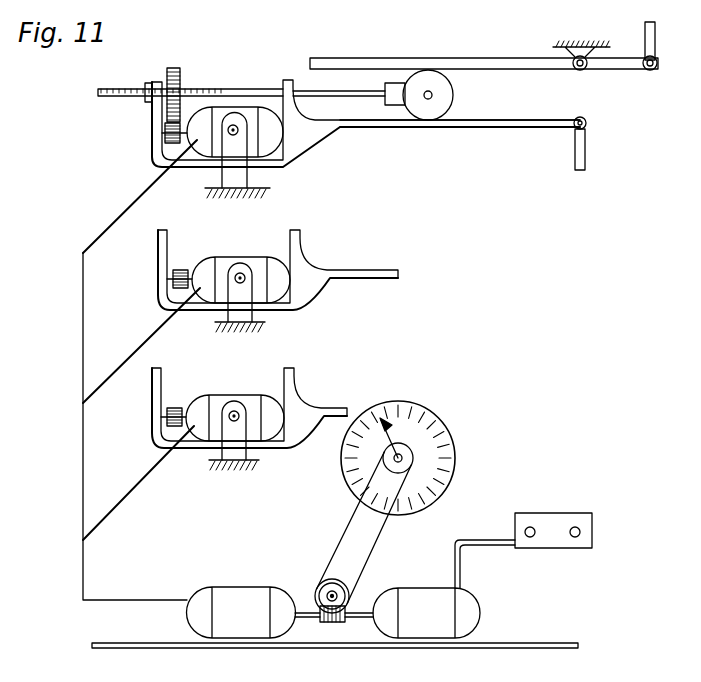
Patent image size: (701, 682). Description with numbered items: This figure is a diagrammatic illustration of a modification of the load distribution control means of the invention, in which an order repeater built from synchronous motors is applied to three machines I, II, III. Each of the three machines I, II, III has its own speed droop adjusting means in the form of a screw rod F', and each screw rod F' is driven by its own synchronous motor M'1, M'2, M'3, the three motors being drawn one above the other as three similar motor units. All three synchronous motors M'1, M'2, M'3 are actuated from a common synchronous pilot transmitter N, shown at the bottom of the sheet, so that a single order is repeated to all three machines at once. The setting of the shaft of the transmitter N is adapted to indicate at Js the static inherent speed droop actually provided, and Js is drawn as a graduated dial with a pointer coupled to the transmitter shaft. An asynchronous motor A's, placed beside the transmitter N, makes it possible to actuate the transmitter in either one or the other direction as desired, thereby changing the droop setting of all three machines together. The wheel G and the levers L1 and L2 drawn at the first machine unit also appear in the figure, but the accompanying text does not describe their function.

The first machine I is at (362, 130).
The second machine II is at (250, 250).
The third machine III is at (246, 388).
The screw rod F' is at (190, 110).
The synchronous motor M'1 is at (252, 149).
The synchronous motor M'2 is at (257, 298).
The synchronous motor M'3 is at (251, 437).
The gear wheel G is at (431, 114).
The lower lever L1 is at (518, 128).
The upper lever L2 is at (509, 57).
The speed droop indicator Js is at (465, 451).
The synchronous pilot transmitter N is at (246, 573).
The asynchronous motor A's is at (482, 575).